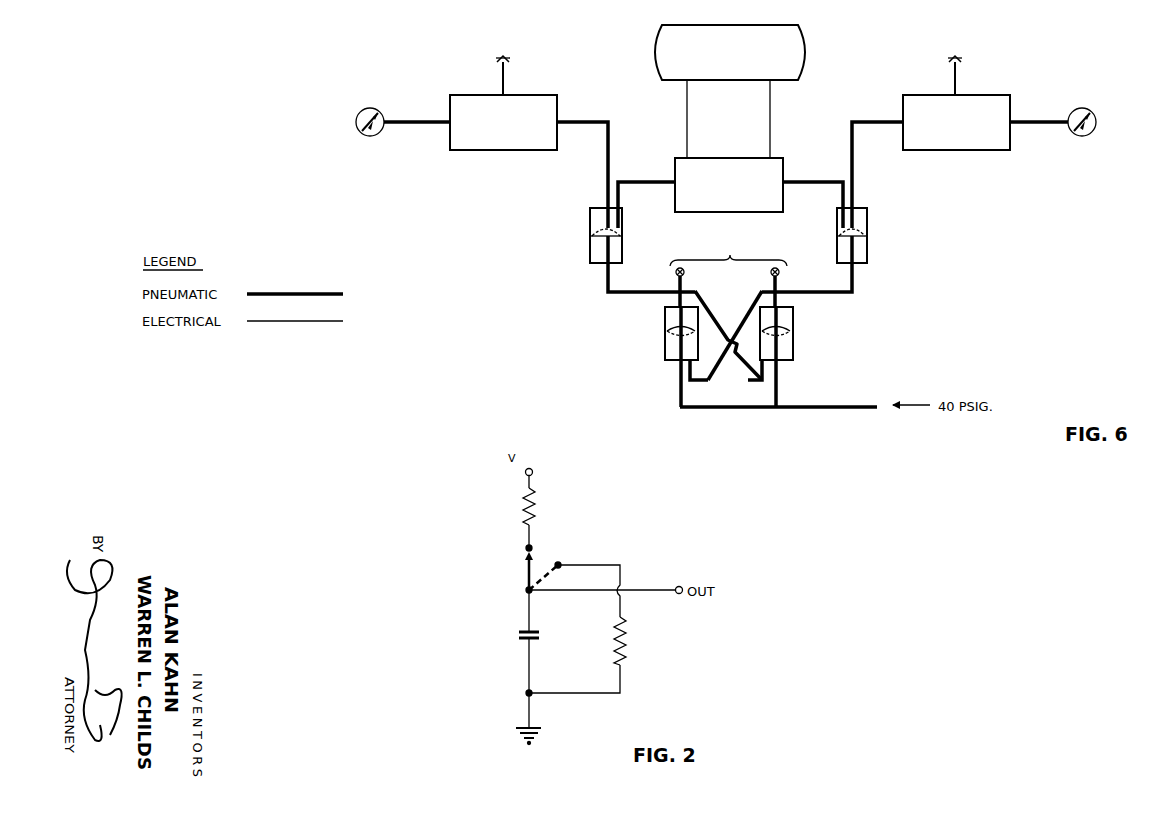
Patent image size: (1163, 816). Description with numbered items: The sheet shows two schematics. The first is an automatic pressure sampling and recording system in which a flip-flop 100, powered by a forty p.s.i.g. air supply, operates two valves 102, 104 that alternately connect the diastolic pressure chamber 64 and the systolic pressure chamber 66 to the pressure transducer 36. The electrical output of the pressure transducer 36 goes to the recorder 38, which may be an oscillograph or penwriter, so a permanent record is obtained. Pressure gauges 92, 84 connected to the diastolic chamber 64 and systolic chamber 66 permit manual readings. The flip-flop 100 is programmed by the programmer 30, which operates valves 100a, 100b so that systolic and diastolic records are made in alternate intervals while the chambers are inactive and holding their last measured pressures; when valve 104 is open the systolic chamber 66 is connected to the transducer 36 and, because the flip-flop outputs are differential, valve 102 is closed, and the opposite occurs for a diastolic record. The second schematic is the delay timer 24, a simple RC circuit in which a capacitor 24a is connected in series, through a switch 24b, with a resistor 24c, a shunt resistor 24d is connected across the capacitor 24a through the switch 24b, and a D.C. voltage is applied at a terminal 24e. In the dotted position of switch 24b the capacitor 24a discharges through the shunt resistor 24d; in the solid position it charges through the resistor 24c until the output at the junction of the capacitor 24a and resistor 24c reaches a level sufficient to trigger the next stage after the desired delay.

In FIG. 6, the recorder 38 is at (763, 25).
In FIG. 6, the pressure transducer 36 is at (726, 158).
In FIG. 6, the diastolic pressure chamber 64 is at (503, 103).
In FIG. 6, the systolic pressure chamber 66 is at (977, 95).
In FIG. 6, the pressure gauge 92 is at (378, 110).
In FIG. 6, the pressure gauge 84 is at (1091, 110).
In FIG. 6, the valve 102 is at (590, 206).
In FIG. 6, the valve 104 is at (866, 206).
In FIG. 6, the programmer 30 is at (728, 242).
In FIG. 6, the flip-flop 100 is at (632, 340).
In FIG. 6, the valve 100a is at (684, 272).
In FIG. 6, the valve 100b is at (779, 272).
In FIG. 2, the delay timer 24 is at (487, 602).
In FIG. 2, the capacitor 24a is at (540, 637).
In FIG. 2, the switch 24b is at (525, 568).
In FIG. 2, the resistor 24c is at (521, 497).
In FIG. 2, the shunt resistor 24d is at (628, 645).
In FIG. 2, the terminal 24e is at (533, 470).